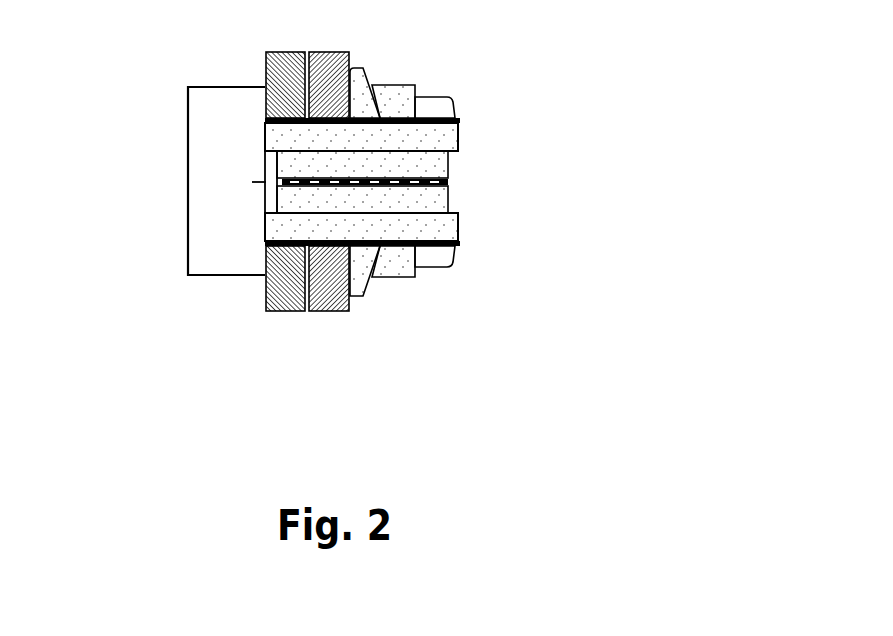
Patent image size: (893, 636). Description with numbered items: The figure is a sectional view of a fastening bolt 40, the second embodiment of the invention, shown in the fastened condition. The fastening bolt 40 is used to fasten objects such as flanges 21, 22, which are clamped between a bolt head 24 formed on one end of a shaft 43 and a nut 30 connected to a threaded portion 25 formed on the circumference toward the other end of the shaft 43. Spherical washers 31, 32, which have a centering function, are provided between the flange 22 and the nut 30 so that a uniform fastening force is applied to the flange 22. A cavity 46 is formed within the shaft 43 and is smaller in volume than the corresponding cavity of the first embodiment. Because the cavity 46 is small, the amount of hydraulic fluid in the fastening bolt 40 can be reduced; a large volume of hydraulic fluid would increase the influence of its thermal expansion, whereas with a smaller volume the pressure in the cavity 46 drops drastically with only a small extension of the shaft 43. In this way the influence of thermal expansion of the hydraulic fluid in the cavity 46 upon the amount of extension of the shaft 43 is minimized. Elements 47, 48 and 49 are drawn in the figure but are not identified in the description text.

The fastening bolt 40 is at (552, 25).
The bolt head 24 is at (217, 160).
The cavity 46 is at (266, 207).
The shaft 43 is at (303, 230).
The outer tube wall 47 is at (455, 158).
The inner layer 48 is at (450, 170).
The core layer 49 is at (455, 182).
The threaded portion 25 is at (458, 250).
The flange 21 is at (267, 290).
The flange 22 is at (348, 302).
The spherical washer 31 is at (365, 292).
The spherical washer 32 is at (410, 283).
The nut 30 is at (437, 260).